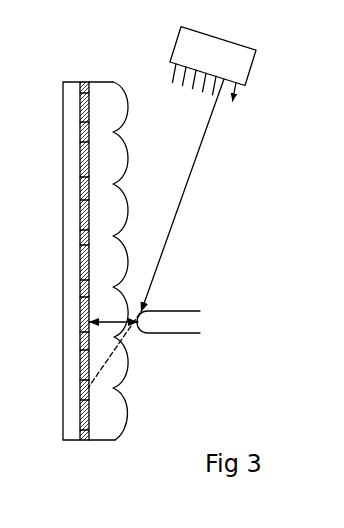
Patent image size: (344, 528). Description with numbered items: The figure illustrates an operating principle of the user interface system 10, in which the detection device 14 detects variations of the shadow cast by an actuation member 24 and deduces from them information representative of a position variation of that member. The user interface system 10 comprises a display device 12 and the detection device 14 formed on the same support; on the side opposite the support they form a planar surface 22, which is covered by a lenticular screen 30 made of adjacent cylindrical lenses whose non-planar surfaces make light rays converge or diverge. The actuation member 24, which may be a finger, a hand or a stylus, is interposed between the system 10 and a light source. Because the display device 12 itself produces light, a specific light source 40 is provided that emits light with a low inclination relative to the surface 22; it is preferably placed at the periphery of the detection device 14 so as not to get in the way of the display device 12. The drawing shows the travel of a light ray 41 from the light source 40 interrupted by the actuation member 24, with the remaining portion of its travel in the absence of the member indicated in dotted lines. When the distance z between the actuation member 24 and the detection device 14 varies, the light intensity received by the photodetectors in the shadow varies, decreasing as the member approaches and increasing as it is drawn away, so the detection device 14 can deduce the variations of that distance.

The user interface system 10 is at (236, 166).
The display device 12 is at (82, 410).
The detection device 14 is at (82, 390).
The planar surface 22 is at (87, 98).
The actuation member 24 is at (180, 325).
The lenticular screen 30 is at (117, 417).
The light source 40 is at (233, 52).
The light ray 41 is at (178, 218).
The distance z is at (115, 335).